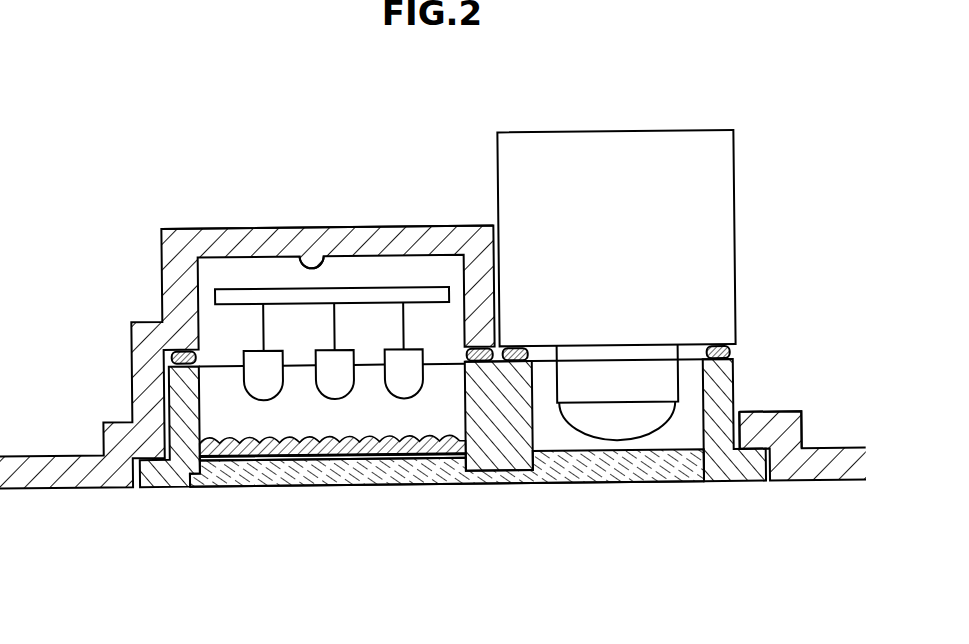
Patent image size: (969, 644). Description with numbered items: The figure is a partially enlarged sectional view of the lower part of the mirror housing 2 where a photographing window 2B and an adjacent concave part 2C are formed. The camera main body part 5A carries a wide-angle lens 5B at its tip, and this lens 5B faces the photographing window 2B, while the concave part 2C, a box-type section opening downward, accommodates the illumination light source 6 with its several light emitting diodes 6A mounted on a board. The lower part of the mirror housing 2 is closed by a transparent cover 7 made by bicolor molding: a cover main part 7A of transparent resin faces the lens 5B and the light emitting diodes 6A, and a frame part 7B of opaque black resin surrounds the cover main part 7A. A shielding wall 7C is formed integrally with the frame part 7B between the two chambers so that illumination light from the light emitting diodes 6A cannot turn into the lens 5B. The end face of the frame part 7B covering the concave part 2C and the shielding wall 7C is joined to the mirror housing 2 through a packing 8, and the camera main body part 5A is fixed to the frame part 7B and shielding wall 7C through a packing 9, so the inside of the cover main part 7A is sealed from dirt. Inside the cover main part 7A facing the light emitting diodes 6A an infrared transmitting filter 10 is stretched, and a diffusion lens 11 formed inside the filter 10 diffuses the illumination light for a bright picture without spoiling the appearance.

The mirror housing 2 is at (80, 498).
The photographing window 2B is at (740, 434).
The concave part 2C is at (325, 256).
The camera main body part 5A is at (737, 250).
The lens 5B is at (644, 441).
The illumination light source 6 is at (245, 280).
The light emitting diode 6A is at (328, 387).
The transparent cover 7 is at (425, 498).
The cover main part 7A is at (370, 487).
The frame part 7B is at (172, 498).
The shielding wall 7C is at (500, 486).
The packing 8 is at (172, 360).
The packing 9 is at (737, 357).
The infrared transmitting filter 10 is at (318, 460).
The diffusion lens 11 is at (258, 449).